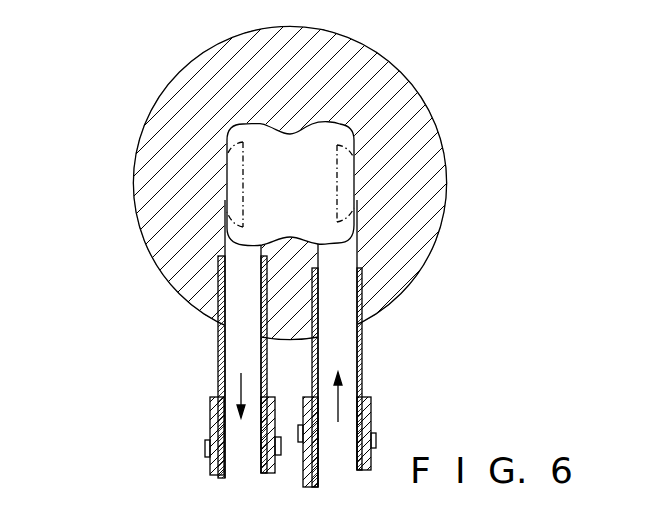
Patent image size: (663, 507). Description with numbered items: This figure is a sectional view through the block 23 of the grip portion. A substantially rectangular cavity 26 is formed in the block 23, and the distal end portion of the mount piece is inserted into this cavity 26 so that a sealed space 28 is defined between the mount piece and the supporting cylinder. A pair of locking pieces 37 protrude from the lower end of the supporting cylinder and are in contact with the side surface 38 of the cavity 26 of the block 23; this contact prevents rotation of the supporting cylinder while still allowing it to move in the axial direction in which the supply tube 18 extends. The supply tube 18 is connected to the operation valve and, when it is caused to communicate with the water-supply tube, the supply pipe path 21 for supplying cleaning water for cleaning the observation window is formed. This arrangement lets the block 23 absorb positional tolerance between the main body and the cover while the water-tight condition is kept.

The block 23 is at (393, 80).
The cavity 26 is at (310, 137).
The sealed space 28 is at (277, 148).
The side surface 38 is at (243, 170).
The locking pieces 37 is at (232, 212).
The supply pipe path 21 is at (238, 345).
The supply tube 18 is at (218, 379).